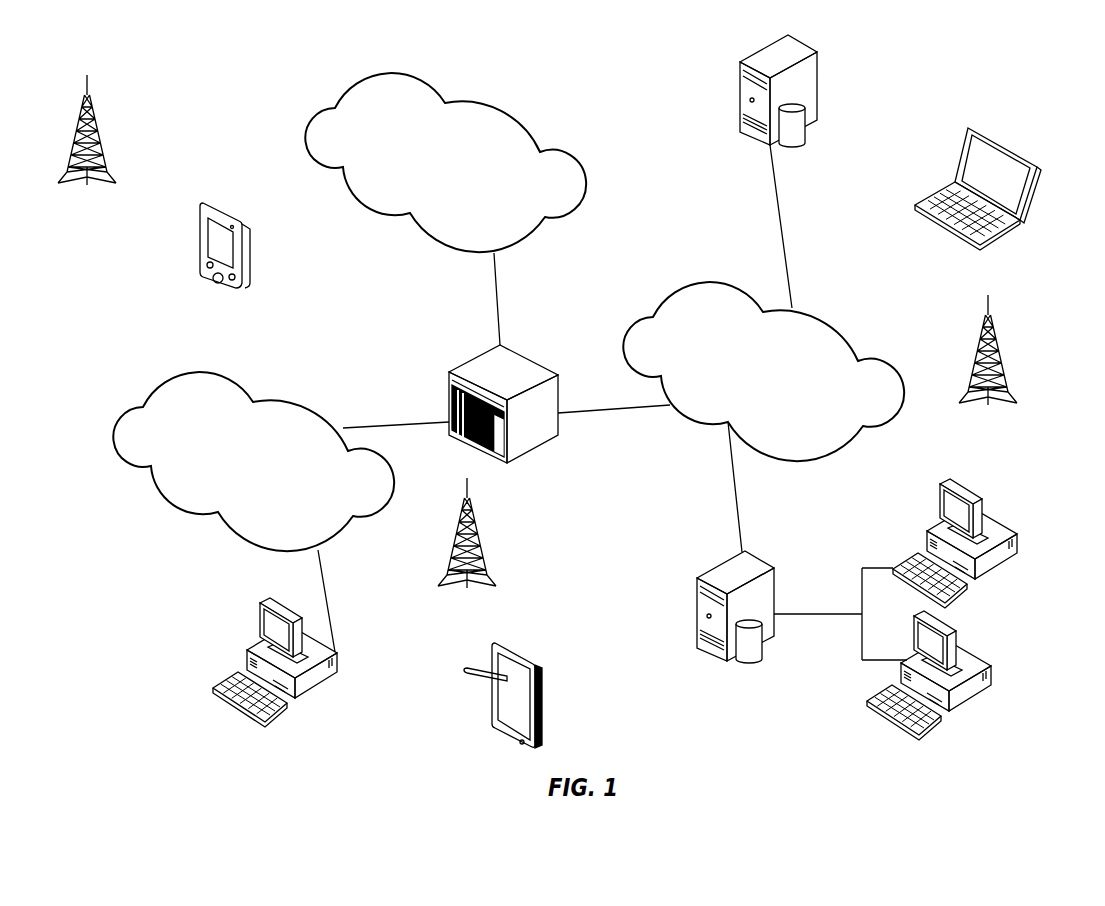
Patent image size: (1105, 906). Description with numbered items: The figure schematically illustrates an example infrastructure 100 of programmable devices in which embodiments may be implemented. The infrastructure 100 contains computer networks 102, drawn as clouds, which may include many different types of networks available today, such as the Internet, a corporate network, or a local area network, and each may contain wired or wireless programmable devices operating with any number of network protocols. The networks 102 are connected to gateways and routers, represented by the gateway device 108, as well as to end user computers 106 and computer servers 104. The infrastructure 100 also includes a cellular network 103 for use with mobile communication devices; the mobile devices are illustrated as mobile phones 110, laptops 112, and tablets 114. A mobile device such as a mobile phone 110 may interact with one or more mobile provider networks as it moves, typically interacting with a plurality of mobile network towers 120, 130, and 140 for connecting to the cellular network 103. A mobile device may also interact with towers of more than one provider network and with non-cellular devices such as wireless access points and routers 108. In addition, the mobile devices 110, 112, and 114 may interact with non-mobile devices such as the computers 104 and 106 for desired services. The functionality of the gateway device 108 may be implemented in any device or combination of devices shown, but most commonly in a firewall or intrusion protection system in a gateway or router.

The infrastructure 100 is at (897, 122).
The computer networks 102 is at (242, 386).
The cellular network 103 is at (490, 103).
The computer servers 104 is at (745, 85).
The end user computers 106 is at (337, 653).
The gateways and routers 108 is at (524, 357).
The mobile phones 110 is at (230, 210).
The laptops 112 is at (1017, 150).
The tablets 114 is at (530, 652).
The mobile network tower 120 is at (467, 550).
The mobile network tower 130 is at (988, 366).
The mobile network tower 140 is at (87, 147).